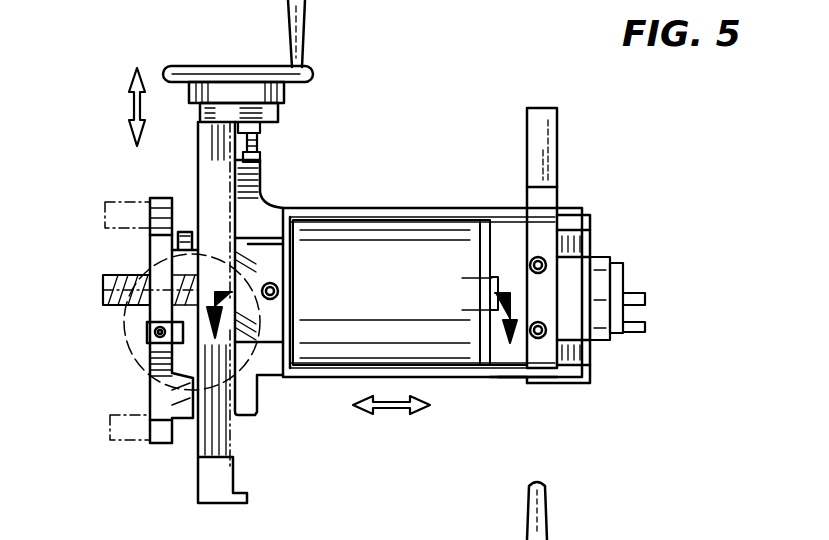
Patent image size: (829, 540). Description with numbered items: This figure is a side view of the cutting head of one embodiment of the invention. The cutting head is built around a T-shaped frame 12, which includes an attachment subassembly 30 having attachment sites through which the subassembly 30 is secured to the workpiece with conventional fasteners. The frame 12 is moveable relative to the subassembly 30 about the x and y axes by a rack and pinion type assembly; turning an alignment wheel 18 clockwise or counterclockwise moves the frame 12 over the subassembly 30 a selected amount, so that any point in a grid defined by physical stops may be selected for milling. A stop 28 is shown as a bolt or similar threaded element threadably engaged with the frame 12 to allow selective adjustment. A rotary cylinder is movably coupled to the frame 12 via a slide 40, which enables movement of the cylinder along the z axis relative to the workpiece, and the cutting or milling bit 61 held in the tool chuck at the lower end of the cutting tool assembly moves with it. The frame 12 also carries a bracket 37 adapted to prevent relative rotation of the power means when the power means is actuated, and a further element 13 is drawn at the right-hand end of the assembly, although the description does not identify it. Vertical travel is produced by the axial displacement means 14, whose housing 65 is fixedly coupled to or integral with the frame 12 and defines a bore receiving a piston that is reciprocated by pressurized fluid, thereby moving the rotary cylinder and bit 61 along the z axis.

The alignment wheel 18 is at (192, 65).
The physical stop 28 is at (260, 143).
The housing 65 is at (357, 207).
The axial displacement means 14 is at (415, 235).
The bracket 37 is at (557, 122).
The T-shaped frame 12 is at (575, 213).
The fitting 13 is at (622, 332).
The slide 40 is at (498, 357).
The cutting bit 61 is at (104, 276).
The attachment subassembly 30 is at (162, 447).